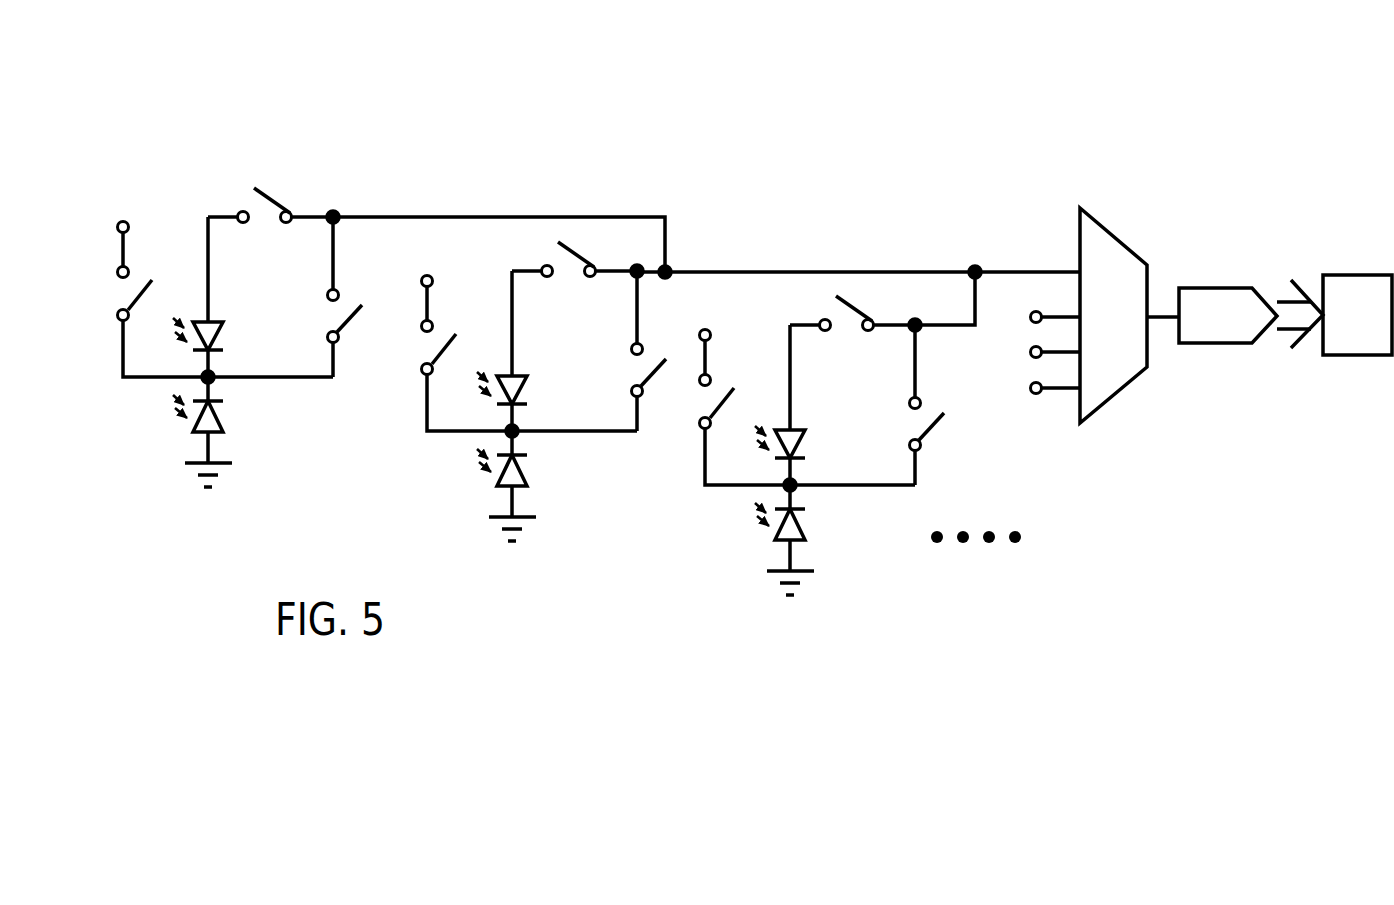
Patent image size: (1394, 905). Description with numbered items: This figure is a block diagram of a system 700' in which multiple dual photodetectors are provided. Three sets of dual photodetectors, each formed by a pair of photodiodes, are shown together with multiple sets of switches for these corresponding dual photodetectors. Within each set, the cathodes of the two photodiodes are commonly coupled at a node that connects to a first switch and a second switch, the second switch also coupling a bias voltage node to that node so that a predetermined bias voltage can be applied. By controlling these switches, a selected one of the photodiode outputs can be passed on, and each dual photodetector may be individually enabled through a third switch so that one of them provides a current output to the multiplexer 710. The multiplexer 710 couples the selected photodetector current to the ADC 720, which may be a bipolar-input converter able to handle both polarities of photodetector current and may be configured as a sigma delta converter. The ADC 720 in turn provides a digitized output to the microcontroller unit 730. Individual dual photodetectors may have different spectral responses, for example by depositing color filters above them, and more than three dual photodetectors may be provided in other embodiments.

The system 700' is at (733, 317).
The multiplexer 710 is at (1113, 395).
The ADC 720 is at (1213, 343).
The microcontroller unit 730 is at (1357, 357).